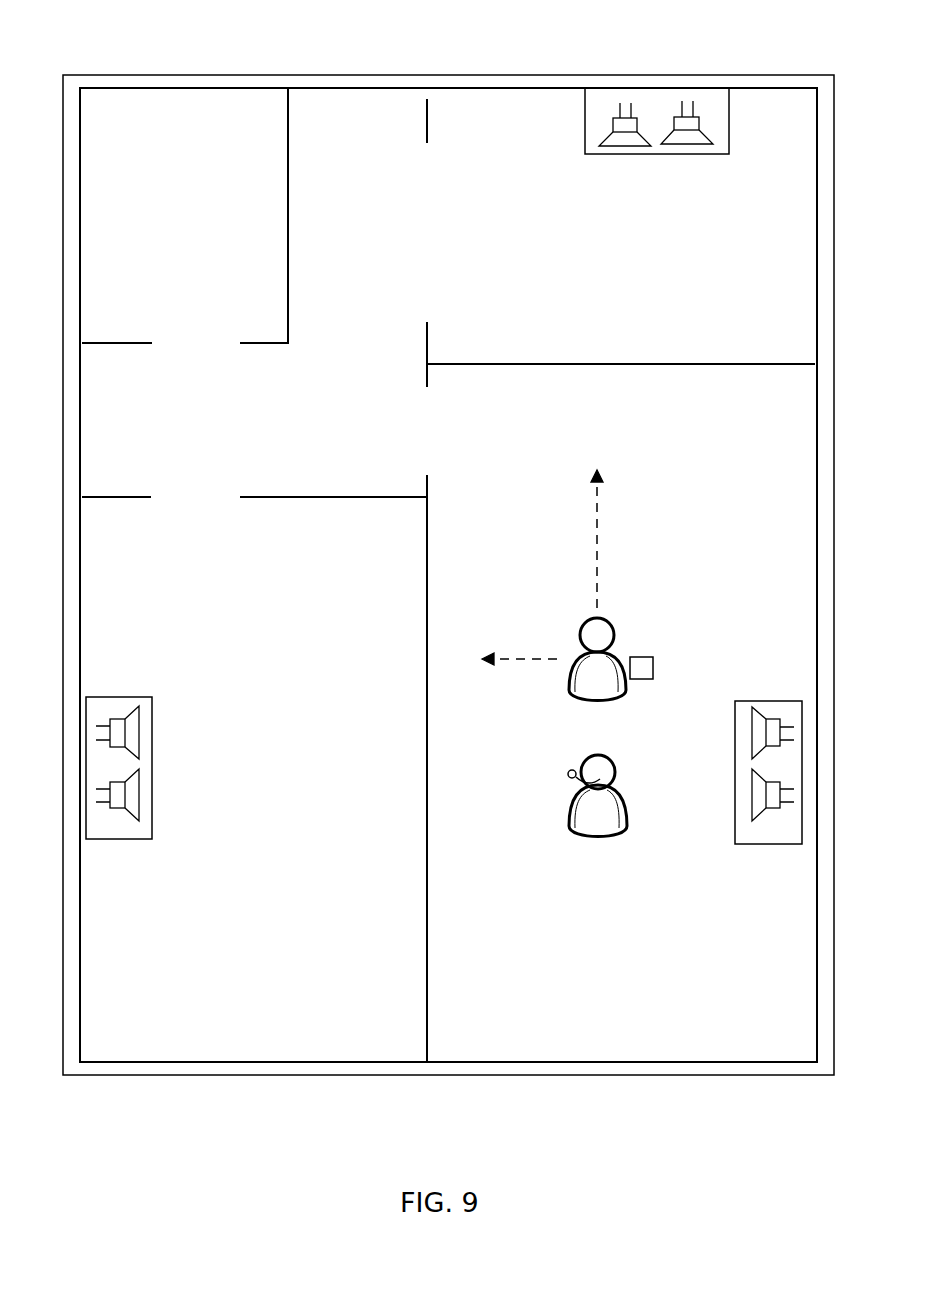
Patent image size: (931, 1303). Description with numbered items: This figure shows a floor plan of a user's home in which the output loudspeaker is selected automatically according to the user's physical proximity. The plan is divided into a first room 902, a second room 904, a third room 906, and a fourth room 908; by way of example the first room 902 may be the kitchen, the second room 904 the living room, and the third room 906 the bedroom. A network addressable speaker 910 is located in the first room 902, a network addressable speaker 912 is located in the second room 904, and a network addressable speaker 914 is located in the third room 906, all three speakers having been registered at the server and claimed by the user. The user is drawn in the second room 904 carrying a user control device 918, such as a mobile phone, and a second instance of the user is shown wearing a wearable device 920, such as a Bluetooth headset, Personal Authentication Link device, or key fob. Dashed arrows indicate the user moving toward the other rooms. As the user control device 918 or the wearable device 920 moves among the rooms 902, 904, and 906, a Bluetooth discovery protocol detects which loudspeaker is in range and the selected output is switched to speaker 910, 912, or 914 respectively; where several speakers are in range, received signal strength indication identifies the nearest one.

The first room 902 is at (621, 243).
The second room 904 is at (622, 713).
The third room 906 is at (254, 768).
The fourth room 908 is at (185, 215).
The network addressable speaker 910 is at (584, 121).
The network addressable speaker 912 is at (767, 845).
The network addressable speaker 914 is at (118, 840).
The user control device 918 is at (653, 664).
The wearable device 920 is at (569, 771).